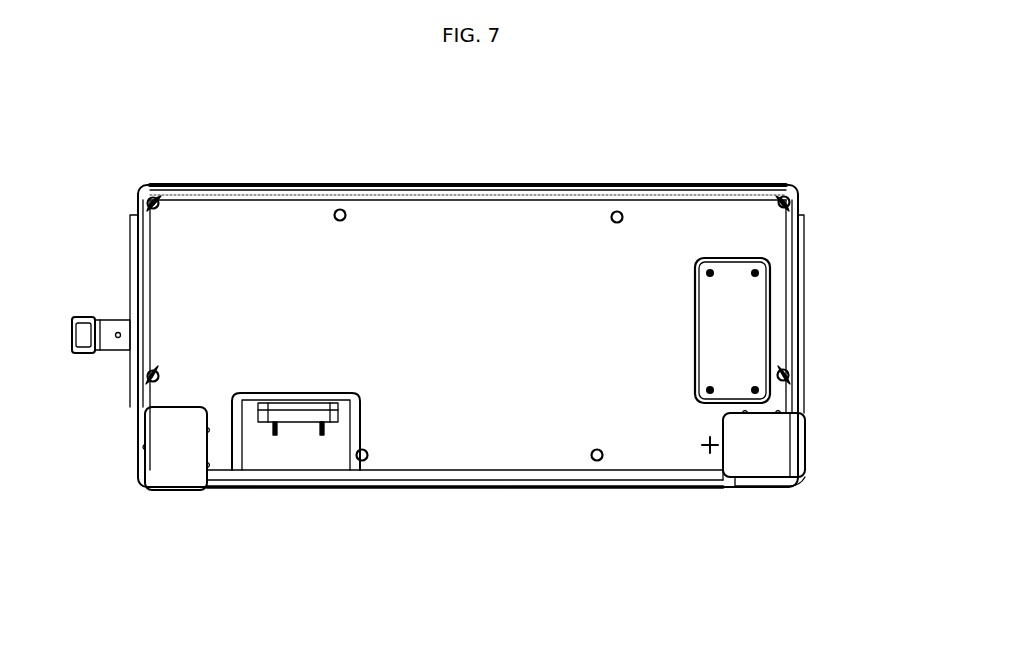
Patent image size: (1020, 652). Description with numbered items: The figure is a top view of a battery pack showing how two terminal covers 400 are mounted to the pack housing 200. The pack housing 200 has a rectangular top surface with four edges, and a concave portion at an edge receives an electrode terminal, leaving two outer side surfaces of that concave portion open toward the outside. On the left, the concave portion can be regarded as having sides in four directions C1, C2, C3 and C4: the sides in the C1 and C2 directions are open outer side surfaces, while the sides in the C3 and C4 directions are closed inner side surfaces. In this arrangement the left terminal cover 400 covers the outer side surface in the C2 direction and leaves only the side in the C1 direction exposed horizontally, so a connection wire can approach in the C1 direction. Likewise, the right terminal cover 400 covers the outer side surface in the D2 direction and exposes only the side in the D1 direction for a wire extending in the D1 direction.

The pack housing 200 is at (581, 171).
The terminal cover 400 is at (160, 467).
The C1 direction C1 is at (115, 450).
The C2 direction C2 is at (176, 507).
The C3 direction C3 is at (223, 449).
The C4 direction C4 is at (188, 397).
The D1 direction D1 is at (760, 507).
The D2 direction D2 is at (808, 448).